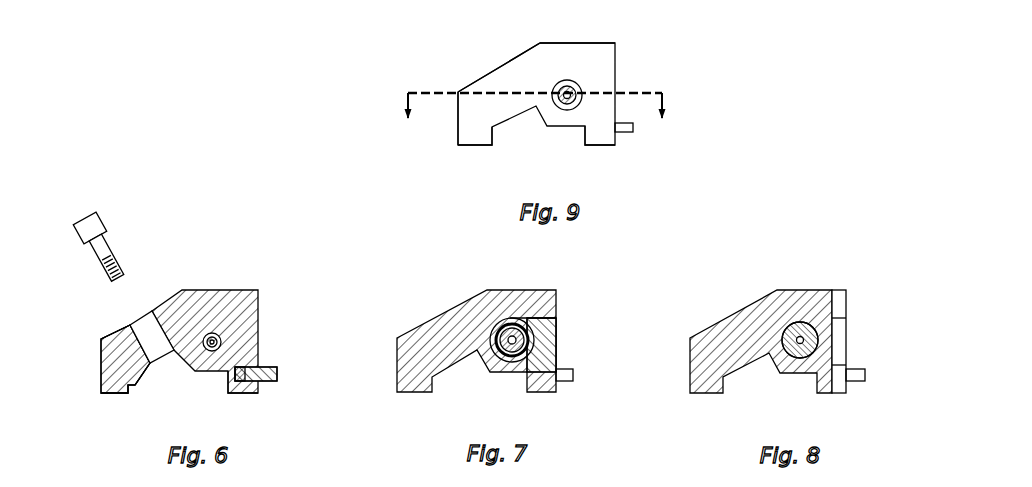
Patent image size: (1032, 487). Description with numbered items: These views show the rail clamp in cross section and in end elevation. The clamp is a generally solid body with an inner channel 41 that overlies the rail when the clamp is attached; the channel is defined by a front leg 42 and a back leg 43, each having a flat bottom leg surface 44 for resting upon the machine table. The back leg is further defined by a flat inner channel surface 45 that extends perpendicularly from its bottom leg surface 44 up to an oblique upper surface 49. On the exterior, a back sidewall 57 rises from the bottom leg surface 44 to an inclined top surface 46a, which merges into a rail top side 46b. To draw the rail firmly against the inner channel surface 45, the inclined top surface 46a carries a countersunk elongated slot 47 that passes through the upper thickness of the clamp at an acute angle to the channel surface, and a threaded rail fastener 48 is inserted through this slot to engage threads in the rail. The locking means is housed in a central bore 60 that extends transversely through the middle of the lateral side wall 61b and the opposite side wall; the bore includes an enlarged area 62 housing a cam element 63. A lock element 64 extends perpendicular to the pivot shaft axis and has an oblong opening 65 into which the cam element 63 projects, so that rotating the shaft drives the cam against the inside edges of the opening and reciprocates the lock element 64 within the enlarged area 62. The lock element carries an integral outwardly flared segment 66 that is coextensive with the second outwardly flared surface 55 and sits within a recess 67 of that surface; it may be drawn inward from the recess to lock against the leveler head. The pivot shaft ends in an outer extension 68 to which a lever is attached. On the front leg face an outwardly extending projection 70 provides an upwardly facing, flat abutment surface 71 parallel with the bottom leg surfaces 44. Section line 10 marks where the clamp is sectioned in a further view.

In FIG. 9, the section line 10- 10 is at (532, 105).
In FIG. 9, the inner channel 41 is at (545, 113).
In FIG. 7, the inner channel 41 is at (477, 392).
In FIG. 8, the inner channel 41 is at (770, 392).
In FIG. 6, the front leg 42 is at (272, 392).
In FIG. 6, the back leg 43 is at (90, 398).
In FIG. 9, the bottom leg surface 44 is at (473, 146).
In FIG. 6, the bottom leg surface 44 is at (118, 395).
In FIG. 6, the inner channel surface 45 is at (136, 386).
In FIG. 9, the inclined top surface 46a is at (500, 67).
In FIG. 6, the inclined top surface 46a is at (118, 329).
In FIG. 9, the rail top side 46b is at (583, 42).
In FIG. 6, the countersunk elongated slot 47 is at (147, 320).
In FIG. 6, the threaded rail fastener 48 is at (117, 233).
In FIG. 6, the oblique upper surface 49 is at (147, 368).
In FIG. 8, the second outwardly flared surface 55 is at (843, 302).
In FIG. 9, the back sidewall 57 is at (458, 120).
In FIG. 6, the central bore 60 is at (213, 332).
In FIG. 9, the lateral side wall 61b is at (535, 69).
In FIG. 7, the enlarged area 62 is at (490, 328).
In FIG. 7, the cam element 63 is at (545, 293).
In FIG. 8, the cam element 63 is at (798, 323).
In FIG. 7, the lock element 64 is at (558, 325).
In FIG. 7, the oblong opening 65 is at (508, 320).
In FIG. 8, the outwardly flared segment 66 is at (838, 349).
In FIG. 8, the recess 67 is at (840, 319).
In FIG. 9, the outer extension 68 is at (572, 90).
In FIG. 9, the outwardly extending projection 70 is at (624, 127).
In FIG. 6, the outwardly extending projection 70 is at (279, 374).
In FIG. 7, the outwardly extending projection 70 is at (572, 373).
In FIG. 8, the outwardly extending projection 70 is at (862, 376).
In FIG. 6, the abutment surface 71 is at (266, 366).